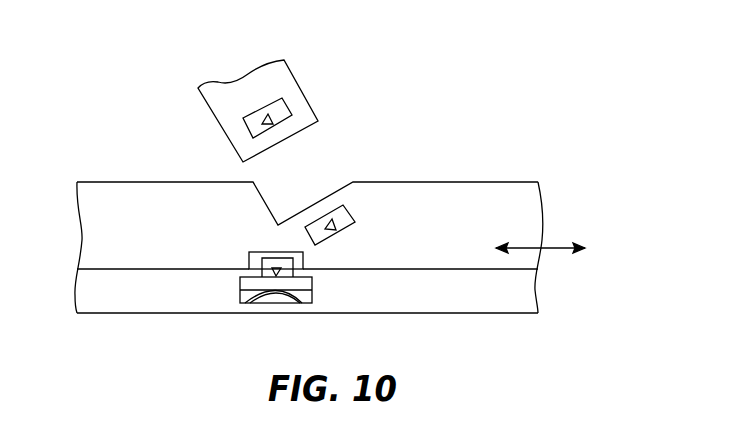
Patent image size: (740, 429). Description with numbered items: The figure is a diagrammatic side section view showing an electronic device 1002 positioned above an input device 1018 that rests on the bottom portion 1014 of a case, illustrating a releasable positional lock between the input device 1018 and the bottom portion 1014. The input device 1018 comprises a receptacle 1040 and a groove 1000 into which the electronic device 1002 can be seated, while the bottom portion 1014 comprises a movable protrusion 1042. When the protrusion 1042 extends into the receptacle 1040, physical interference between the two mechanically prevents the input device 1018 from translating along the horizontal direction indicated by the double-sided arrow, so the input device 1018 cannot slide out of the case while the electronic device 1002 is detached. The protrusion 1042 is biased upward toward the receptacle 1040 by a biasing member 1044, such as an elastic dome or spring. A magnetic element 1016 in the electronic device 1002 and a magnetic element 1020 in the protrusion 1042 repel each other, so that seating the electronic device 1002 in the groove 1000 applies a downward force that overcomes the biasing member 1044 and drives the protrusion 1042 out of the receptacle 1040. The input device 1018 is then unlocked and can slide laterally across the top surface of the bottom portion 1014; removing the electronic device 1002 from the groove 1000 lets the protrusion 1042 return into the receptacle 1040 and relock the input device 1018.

The groove 1000 is at (330, 170).
The electronic device 1002 is at (294, 76).
The magnetic element 1016 is at (291, 104).
The input device 1018 is at (520, 212).
The bottom portion 1014 is at (498, 297).
The protrusion 1042 is at (287, 273).
The receptacle 1040 is at (263, 253).
The biasing member 1044 is at (294, 297).
The magnetic element 1020 is at (276, 277).